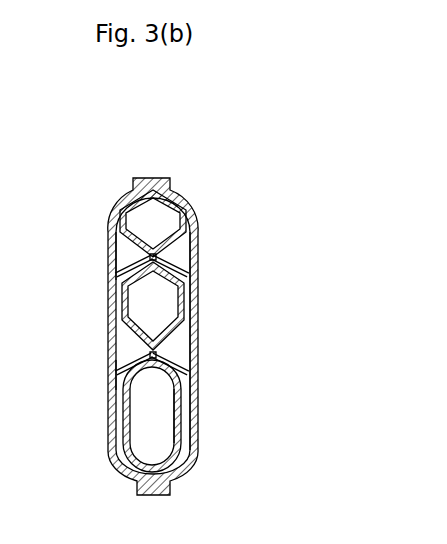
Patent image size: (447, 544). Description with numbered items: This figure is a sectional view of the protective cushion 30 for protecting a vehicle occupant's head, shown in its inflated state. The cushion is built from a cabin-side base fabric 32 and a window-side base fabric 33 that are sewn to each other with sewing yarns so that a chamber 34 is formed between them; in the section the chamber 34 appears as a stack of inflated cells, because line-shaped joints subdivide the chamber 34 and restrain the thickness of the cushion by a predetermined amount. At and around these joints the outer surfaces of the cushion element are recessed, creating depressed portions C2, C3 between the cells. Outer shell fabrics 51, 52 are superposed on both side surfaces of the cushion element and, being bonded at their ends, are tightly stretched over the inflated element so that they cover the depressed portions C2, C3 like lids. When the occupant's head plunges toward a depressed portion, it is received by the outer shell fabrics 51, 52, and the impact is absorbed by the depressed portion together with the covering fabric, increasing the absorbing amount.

The protective cushion 30 is at (204, 137).
The cabin-side base fabric 32 is at (135, 392).
The window-side base fabric 33 is at (172, 393).
The chamber 34 is at (166, 230).
The outer shell fabric 51 is at (112, 340).
The outer shell fabric 52 is at (197, 340).
The depressed portion C2 is at (124, 258).
The depressed portion C3 is at (115, 366).